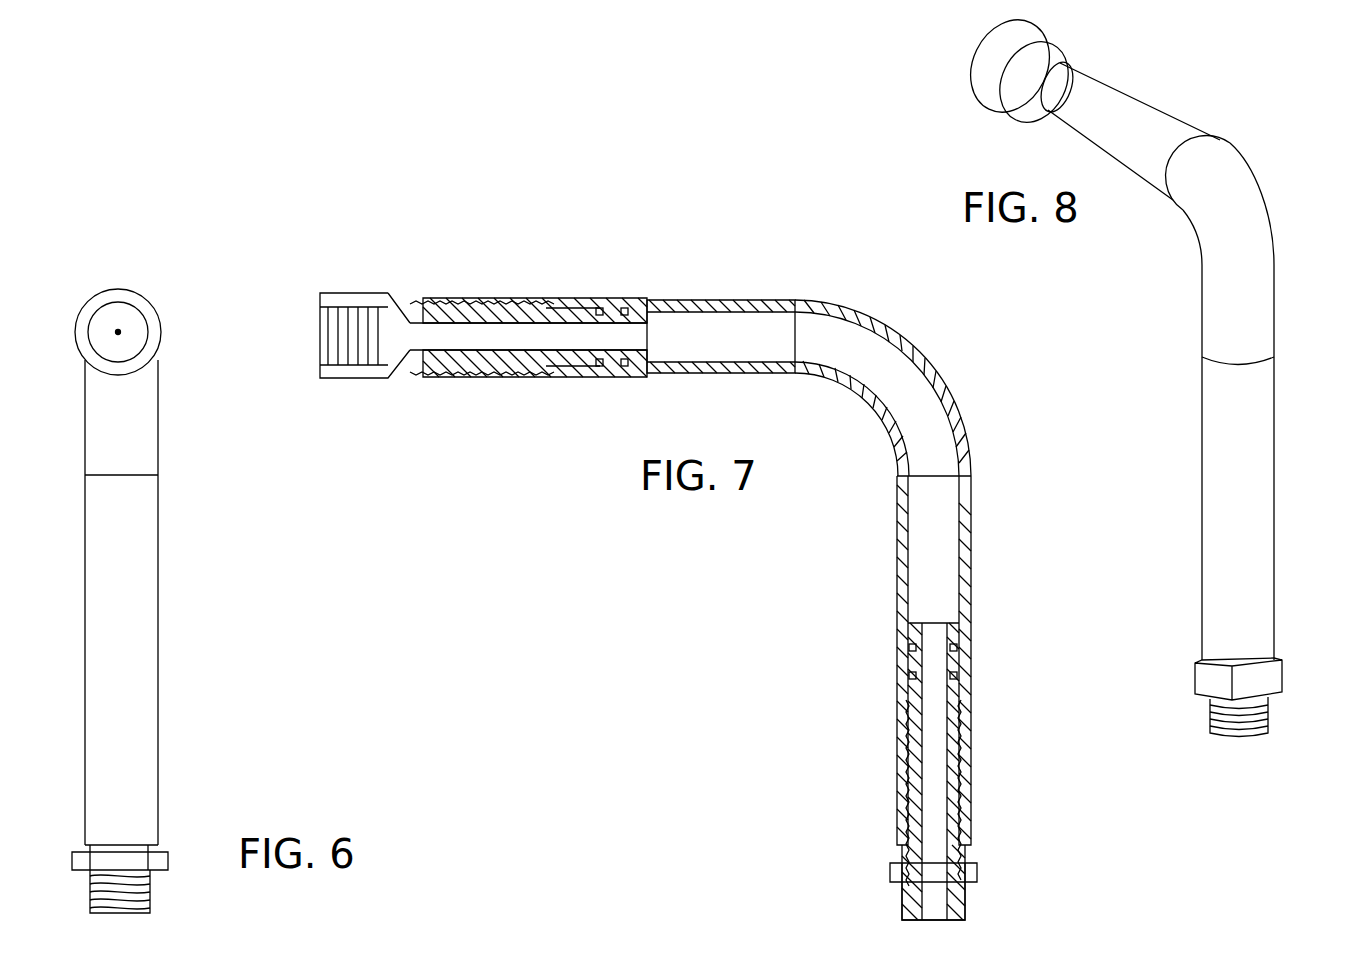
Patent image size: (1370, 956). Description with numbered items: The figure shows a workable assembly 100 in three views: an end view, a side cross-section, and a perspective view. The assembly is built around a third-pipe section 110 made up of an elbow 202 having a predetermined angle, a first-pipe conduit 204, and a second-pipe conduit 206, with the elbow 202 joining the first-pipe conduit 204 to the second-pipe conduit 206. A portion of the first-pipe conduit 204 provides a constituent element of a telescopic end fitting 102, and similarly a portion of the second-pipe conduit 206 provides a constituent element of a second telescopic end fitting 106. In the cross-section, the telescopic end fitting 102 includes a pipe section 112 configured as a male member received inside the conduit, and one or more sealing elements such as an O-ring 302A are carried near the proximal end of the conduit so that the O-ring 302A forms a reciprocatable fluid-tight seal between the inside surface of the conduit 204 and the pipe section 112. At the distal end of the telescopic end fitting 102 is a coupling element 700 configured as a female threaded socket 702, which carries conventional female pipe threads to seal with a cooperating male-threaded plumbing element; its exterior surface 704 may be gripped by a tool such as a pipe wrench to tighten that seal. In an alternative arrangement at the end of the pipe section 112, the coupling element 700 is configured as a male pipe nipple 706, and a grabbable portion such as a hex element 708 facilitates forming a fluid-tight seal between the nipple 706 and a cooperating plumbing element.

In FIG. 6, the workable assembly 100 is at (215, 290).
In FIG. 7, the workable assembly 100 is at (541, 188).
In FIG. 8, the workable assembly 100 is at (1272, 125).
In FIG. 7, the telescopic end fitting 102 is at (640, 400).
In FIG. 7, the telescopic end fitting 106 is at (1007, 620).
In FIG. 7, the third-pipe section 110 is at (838, 480).
In FIG. 8, the third-pipe section 110 is at (1287, 186).
In FIG. 7, the pipe section 112 is at (410, 303).
In FIG. 6, the elbow 202 is at (152, 408).
In FIG. 7, the elbow 202 is at (925, 367).
In FIG. 8, the elbow 202 is at (1265, 256).
In FIG. 7, the first-pipe conduit 204 is at (727, 303).
In FIG. 8, the first-pipe conduit 204 is at (1148, 105).
In FIG. 6, the second-pipe conduit 206 is at (152, 712).
In FIG. 7, the second-pipe conduit 206 is at (968, 535).
In FIG. 8, the second-pipe conduit 206 is at (1260, 472).
In FIG. 7, the O-ring 302A is at (622, 307).
In FIG. 7, the coupling element 700 is at (356, 280).
In FIG. 6, the female threaded socket 702 is at (118, 332).
In FIG. 7, the female threaded socket 702 is at (335, 345).
In FIG. 8, the exterior surface 704 is at (990, 65).
In FIG. 6, the male pipe nipple 706 is at (120, 891).
In FIG. 7, the male pipe nipple 706 is at (900, 906).
In FIG. 8, the male pipe nipple 706 is at (1270, 710).
In FIG. 6, the hex element 708 is at (165, 860).
In FIG. 7, the hex element 708 is at (892, 872).
In FIG. 8, the hex element 708 is at (1198, 675).